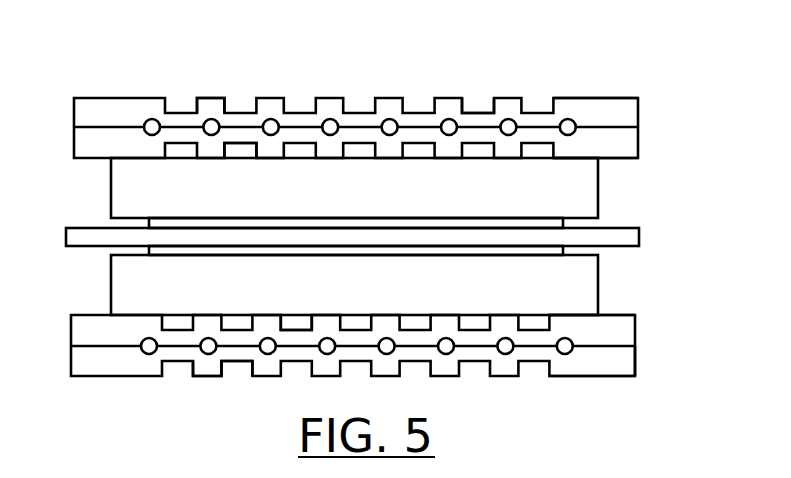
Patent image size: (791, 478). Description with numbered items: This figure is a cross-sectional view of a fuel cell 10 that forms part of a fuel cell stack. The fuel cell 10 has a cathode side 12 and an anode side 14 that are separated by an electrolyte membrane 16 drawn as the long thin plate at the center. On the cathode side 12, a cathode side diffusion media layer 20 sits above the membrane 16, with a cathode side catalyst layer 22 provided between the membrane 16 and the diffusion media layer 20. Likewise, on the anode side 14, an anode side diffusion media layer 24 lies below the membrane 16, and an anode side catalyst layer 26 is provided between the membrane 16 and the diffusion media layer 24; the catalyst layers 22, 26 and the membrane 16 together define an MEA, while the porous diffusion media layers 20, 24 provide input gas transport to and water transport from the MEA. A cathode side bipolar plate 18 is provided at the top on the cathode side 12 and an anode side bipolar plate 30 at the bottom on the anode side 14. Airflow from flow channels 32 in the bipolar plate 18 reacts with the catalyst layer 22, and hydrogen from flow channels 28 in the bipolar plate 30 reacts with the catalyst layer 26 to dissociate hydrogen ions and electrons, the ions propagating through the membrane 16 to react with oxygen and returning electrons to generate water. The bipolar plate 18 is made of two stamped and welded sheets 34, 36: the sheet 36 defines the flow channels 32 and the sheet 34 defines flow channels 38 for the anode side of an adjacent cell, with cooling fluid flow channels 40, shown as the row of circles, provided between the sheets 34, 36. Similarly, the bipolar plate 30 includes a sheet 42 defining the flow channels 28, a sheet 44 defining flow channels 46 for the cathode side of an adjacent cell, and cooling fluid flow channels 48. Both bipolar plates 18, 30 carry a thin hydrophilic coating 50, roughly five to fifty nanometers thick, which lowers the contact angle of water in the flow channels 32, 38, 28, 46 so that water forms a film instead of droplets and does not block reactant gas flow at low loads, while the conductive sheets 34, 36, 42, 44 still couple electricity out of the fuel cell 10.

The fuel cell 10 is at (587, 84).
The cathode side 12 is at (624, 189).
The anode side 14 is at (620, 286).
The electrolyte membrane 16 is at (640, 238).
The cathode side bipolar plate 18 is at (123, 88).
The cathode side diffusion media layer 20 is at (112, 189).
The cathode side catalyst layer 22 is at (459, 222).
The anode side diffusion media layer 24 is at (112, 287).
The anode side catalyst layer 26 is at (355, 252).
The flow channels 28 is at (295, 322).
The anode side bipolar plate 30 is at (587, 388).
The flow channels 32 is at (238, 149).
The sheet 34 is at (633, 110).
The sheet 36 is at (633, 140).
The flow channels 38 is at (481, 103).
The cooling fluid flow channels 40 is at (273, 121).
The sheet 42 is at (630, 331).
The sheet 44 is at (630, 361).
The flow channels 46 is at (237, 367).
The cooling fluid flow channels 48 is at (265, 353).
The coating 50 is at (227, 104).